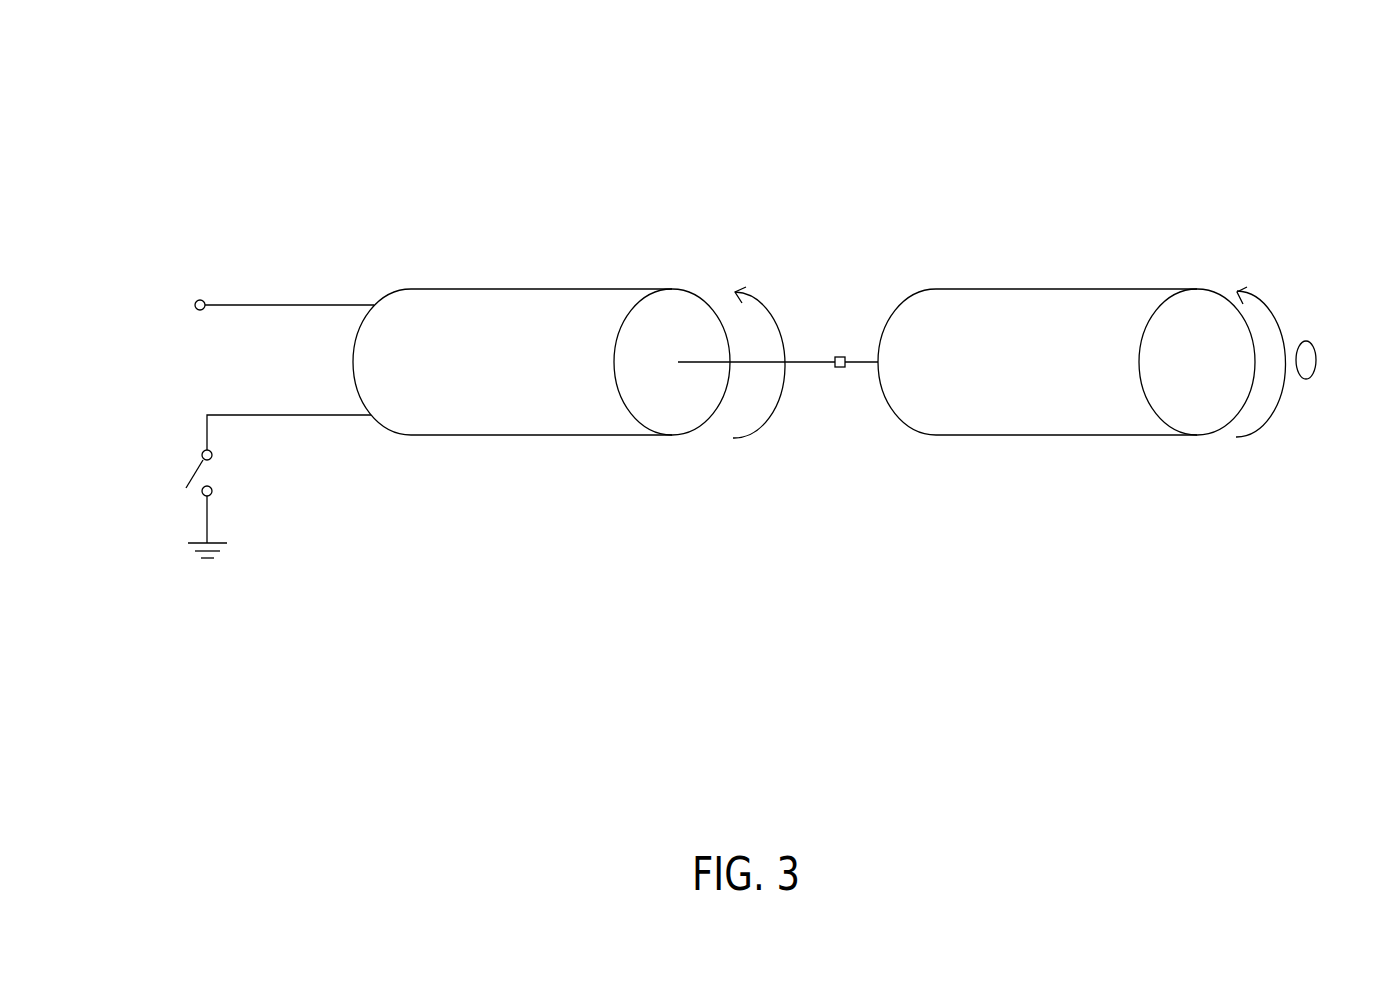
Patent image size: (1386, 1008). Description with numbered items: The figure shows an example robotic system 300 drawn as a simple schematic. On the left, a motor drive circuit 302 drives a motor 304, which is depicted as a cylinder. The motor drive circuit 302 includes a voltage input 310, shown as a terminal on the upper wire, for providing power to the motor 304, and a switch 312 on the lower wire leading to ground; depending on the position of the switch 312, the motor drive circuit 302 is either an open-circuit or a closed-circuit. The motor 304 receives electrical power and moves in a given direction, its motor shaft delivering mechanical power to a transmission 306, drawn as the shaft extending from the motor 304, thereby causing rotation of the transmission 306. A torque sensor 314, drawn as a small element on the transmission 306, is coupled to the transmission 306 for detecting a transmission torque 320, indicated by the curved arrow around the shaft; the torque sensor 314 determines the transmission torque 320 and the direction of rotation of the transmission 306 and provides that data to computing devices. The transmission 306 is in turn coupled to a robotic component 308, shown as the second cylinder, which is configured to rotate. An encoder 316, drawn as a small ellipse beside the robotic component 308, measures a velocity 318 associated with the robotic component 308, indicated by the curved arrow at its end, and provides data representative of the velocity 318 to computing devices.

The robotic system 300 is at (1008, 80).
The motor drive circuit 302 is at (310, 415).
The motor 304 is at (411, 289).
The transmission 306 is at (805, 362).
The robotic component 308 is at (1063, 289).
The voltage input 310 is at (196, 301).
The switch 312 is at (210, 460).
The torque sensor 314 is at (841, 357).
The encoder 316 is at (1308, 341).
The velocity 318 is at (1262, 423).
The transmission torque 320 is at (763, 307).